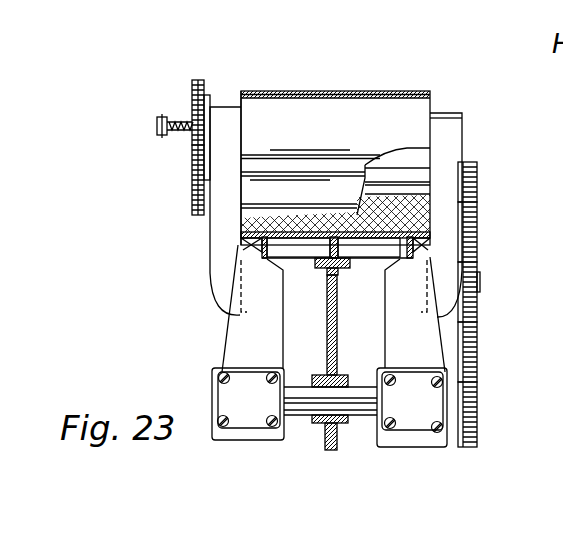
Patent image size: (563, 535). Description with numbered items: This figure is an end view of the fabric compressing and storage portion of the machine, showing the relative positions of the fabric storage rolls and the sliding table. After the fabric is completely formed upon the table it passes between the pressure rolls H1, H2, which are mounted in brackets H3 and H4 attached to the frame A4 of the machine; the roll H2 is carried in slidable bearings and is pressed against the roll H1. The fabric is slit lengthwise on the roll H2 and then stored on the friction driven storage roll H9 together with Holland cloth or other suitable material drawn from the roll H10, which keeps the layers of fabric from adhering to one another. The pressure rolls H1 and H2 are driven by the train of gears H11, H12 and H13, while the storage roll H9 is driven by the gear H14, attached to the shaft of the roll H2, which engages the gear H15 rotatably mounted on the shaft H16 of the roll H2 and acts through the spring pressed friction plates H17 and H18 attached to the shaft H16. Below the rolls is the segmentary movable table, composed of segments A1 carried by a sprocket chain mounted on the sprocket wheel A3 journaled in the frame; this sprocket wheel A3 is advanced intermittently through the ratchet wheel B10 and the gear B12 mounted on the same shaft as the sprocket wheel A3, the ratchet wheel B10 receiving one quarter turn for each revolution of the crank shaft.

The storage roll H9 is at (428, 107).
The pressure roll H2 is at (420, 176).
The pressure roll H1 is at (290, 238).
The roll H10 is at (253, 190).
The bracket H4 is at (218, 208).
The bracket H3 is at (460, 130).
The table segment A1 is at (283, 256).
The sprocket wheel A3 is at (323, 435).
The frame A4 is at (236, 331).
The gear H15 is at (196, 81).
The gear H14 is at (192, 187).
The spring pressed friction plate H17 is at (192, 92).
The spring pressed friction plate H18 is at (210, 92).
The shaft H16 is at (157, 123).
The gear H13 is at (477, 185).
The gear H12 is at (475, 223).
The gear H11 is at (473, 307).
The ratchet wheel B10 is at (472, 348).
The gear B12 is at (472, 420).